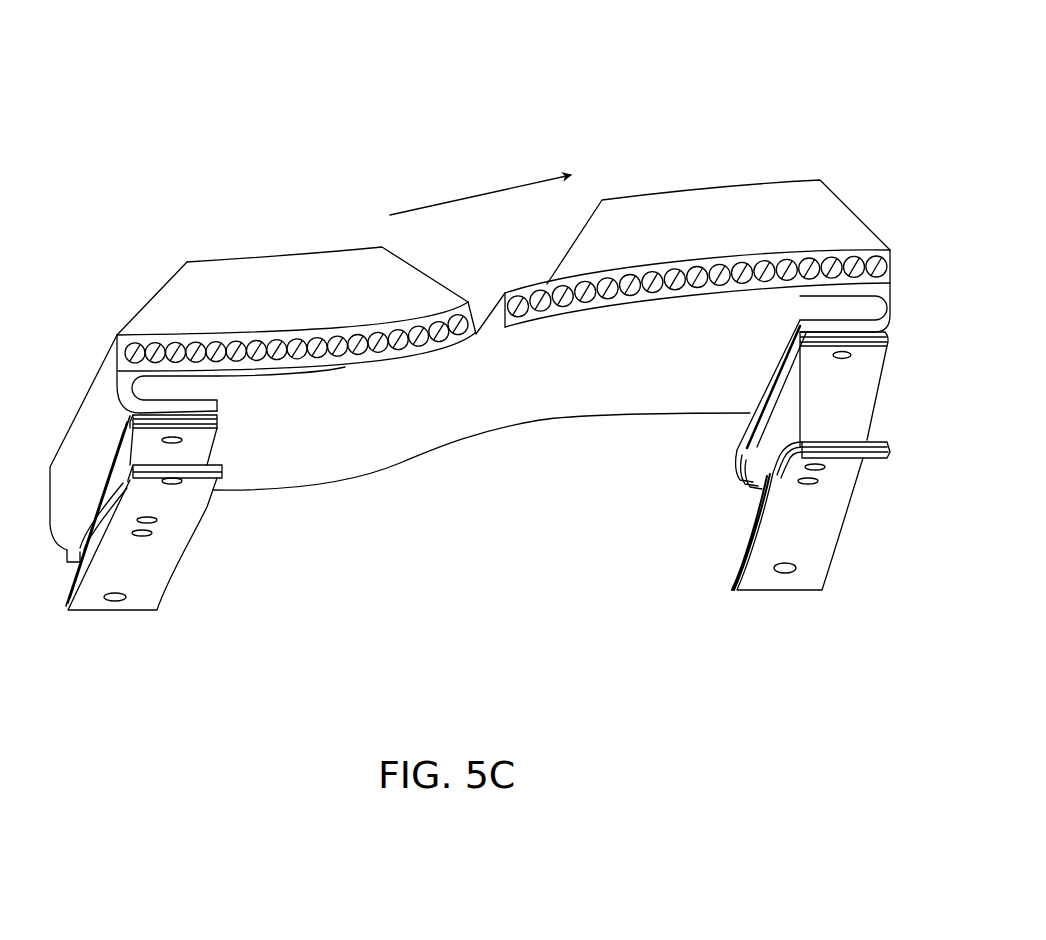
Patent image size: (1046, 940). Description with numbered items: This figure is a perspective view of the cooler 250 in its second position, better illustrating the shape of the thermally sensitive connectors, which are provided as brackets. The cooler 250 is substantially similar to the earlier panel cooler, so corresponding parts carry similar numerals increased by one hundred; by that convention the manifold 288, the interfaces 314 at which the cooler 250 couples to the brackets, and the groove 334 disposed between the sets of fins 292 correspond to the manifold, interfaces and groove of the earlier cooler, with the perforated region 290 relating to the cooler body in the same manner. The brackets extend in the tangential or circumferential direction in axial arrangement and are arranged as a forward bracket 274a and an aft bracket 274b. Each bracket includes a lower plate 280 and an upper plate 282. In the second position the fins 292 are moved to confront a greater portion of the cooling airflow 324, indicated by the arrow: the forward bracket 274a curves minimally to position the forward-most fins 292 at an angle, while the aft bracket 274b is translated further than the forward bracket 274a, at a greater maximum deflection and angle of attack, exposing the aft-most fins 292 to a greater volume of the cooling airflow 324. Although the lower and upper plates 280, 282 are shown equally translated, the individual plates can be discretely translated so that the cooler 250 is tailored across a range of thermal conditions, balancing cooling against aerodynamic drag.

The cooler 250 is at (188, 76).
The cooling airflow 324 is at (470, 192).
The fins 292 is at (210, 268).
The perforated plate 290 is at (616, 293).
The notch 334 is at (493, 337).
The slot 314 is at (218, 402).
The upper plate 282 is at (215, 437).
The curved body 288 is at (502, 423).
The lower plate 280 is at (162, 567).
The forward bracket 274a is at (109, 621).
The aft bracket 274b is at (777, 603).